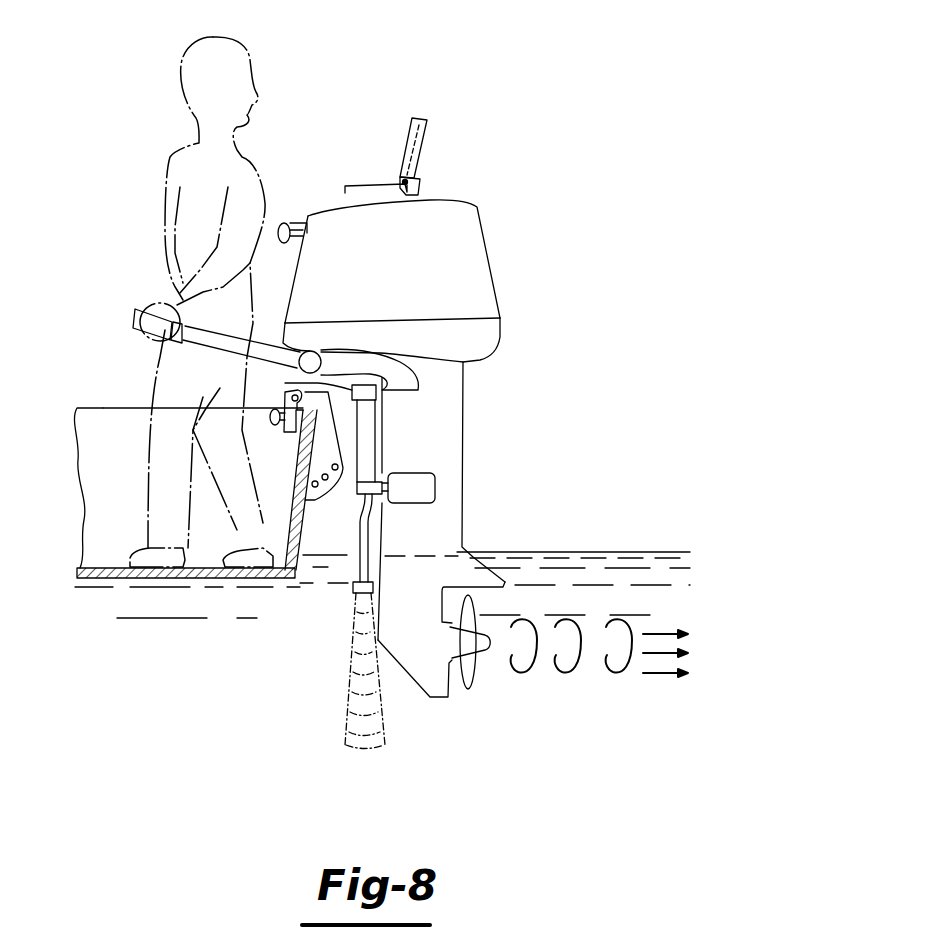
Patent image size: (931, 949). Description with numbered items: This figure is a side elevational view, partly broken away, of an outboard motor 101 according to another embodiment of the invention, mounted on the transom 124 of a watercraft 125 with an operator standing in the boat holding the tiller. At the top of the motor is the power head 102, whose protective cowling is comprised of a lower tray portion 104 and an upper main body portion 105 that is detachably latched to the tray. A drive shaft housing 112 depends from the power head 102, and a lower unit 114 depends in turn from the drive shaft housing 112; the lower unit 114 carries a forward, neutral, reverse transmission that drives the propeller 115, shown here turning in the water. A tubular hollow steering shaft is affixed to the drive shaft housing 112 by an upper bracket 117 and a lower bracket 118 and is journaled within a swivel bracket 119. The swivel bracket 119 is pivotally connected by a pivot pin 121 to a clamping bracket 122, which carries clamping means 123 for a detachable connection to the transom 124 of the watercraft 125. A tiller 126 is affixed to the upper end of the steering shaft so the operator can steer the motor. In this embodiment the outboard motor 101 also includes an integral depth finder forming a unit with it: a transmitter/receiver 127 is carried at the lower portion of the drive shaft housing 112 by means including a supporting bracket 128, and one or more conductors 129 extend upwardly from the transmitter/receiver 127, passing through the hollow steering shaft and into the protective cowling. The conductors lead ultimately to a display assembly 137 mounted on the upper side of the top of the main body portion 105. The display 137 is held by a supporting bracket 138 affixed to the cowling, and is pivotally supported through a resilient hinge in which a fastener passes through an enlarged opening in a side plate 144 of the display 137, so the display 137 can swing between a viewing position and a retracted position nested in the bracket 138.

The outboard motor 101 is at (488, 205).
The power head 102 is at (496, 235).
The lower tray portion 104 is at (473, 337).
The upper main body portion 105 is at (473, 263).
The drive shaft housing 112 is at (447, 465).
The lower unit 114 is at (420, 667).
The propeller 115 is at (475, 667).
The upper bracket 117 is at (362, 392).
The lower bracket 118 is at (372, 488).
The swivel bracket 119 is at (348, 422).
The pivot pin 121 is at (297, 388).
The clamping bracket 122 is at (320, 448).
The clamping means 123 is at (272, 424).
The transom 124 is at (287, 530).
The watercraft 125 is at (103, 407).
The tiller 126 is at (133, 313).
The transmitter/receiver 127 is at (353, 590).
The supporting bracket 128 is at (332, 557).
The conductors 129 is at (365, 538).
The display assembly 137 is at (429, 120).
The supporting bracket 138 is at (358, 195).
The side plate 144 is at (422, 157).